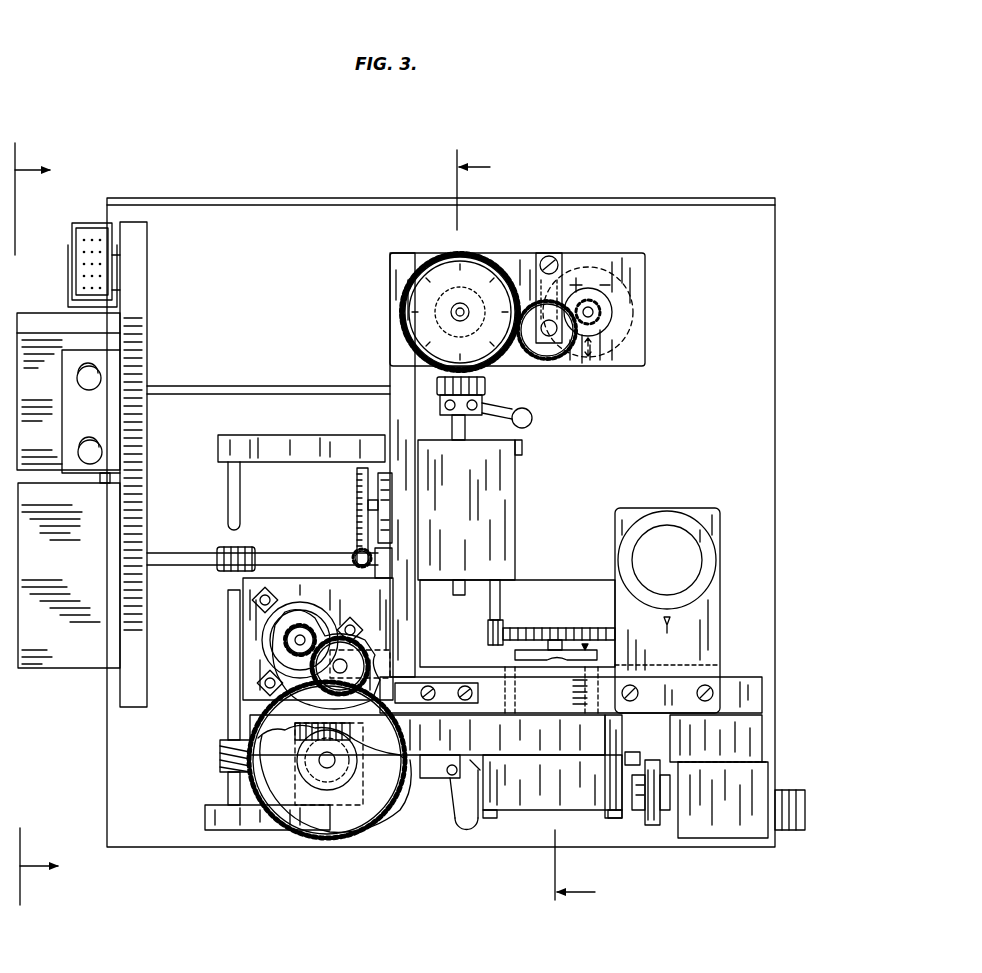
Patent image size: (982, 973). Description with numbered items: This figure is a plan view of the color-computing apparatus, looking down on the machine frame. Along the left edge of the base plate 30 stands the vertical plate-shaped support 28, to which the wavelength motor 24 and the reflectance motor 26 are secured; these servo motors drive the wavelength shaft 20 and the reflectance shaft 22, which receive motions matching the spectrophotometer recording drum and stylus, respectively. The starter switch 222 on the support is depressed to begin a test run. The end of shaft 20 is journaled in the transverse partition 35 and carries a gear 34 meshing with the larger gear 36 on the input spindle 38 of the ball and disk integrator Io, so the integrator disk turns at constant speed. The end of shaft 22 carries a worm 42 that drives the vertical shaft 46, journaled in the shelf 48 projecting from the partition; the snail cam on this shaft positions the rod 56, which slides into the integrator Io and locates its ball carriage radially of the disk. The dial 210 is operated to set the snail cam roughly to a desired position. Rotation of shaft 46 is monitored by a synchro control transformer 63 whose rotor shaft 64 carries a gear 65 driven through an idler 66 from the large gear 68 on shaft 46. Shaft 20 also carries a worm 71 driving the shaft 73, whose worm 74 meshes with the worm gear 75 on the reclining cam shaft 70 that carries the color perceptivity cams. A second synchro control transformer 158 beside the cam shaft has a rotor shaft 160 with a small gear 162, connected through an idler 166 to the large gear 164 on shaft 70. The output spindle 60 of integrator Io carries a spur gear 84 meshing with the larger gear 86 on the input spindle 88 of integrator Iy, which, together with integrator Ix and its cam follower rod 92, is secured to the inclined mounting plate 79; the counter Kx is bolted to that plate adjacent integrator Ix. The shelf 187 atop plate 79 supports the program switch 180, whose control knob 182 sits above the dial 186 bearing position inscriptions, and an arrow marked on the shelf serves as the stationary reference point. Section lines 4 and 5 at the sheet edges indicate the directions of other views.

The section line 4- 4 is at (535, 527).
The section line 5- 5 is at (45, 524).
The wavelength shaft 20 is at (158, 558).
The reflectance shaft 22 is at (205, 393).
The wavelength motor 24 is at (62, 645).
The reflectance motor 26 is at (38, 318).
The plate-shaped support 28 is at (133, 235).
The base plate 30 is at (218, 222).
The gear 34 is at (357, 550).
The partition 35 is at (408, 585).
The gear 36 is at (357, 483).
The input spindle 38 is at (374, 505).
The worm 42 is at (486, 388).
The shaft 46 is at (452, 312).
The shelf 48 is at (632, 268).
The rod 56 is at (452, 425).
The output spindle 60 is at (498, 600).
The synchro control transformer 63 is at (636, 298).
The rotor shaft 64 is at (600, 314).
The gear 65 is at (612, 330).
The idler 66 is at (565, 354).
The large diameter gear 68 is at (402, 292).
The cam shaft 70 is at (322, 760).
The worm 71 is at (222, 570).
The shaft 73 is at (228, 482).
The worm 74 is at (218, 755).
The worm gear 75 is at (262, 718).
The inclined mounting plate 79 is at (752, 680).
The spur gear 84 is at (503, 632).
The gear 86 is at (538, 630).
The input spindle 88 is at (553, 652).
The rod 92 is at (468, 773).
The synchro control transformer 158 is at (268, 640).
The rotor shaft 160 is at (300, 628).
The small gear 162 is at (297, 625).
The large gear 164 is at (357, 690).
The idler 166 is at (368, 650).
The program switch 180 is at (704, 546).
The control knob 182 is at (682, 574).
The dial 186 is at (692, 528).
The shelf 187 is at (700, 642).
The dial 210 is at (470, 278).
The starter switch 222 is at (92, 380).
The ball and disk integrator Io is at (502, 505).
The integrator Ix is at (522, 802).
The integrator Iy is at (585, 648).
The numerical counter Kx is at (738, 820).